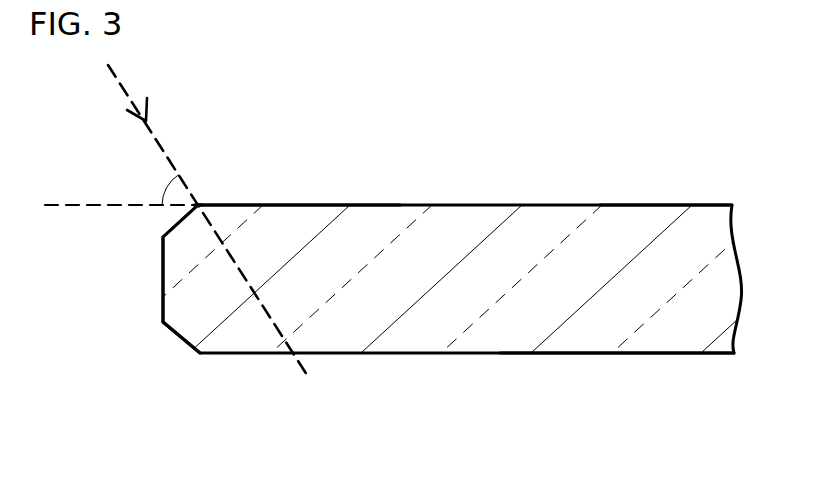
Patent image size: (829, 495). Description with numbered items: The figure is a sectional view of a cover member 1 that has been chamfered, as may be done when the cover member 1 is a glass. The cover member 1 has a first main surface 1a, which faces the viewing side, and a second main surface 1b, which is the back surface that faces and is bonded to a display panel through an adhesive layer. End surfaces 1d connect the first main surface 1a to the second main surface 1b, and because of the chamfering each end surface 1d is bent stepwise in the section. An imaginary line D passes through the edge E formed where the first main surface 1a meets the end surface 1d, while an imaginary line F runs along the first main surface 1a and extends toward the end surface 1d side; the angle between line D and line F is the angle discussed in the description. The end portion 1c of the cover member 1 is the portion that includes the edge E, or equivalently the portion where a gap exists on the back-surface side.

The cover member 1 is at (468, 220).
The first main surface 1a is at (649, 205).
The second main surface 1b is at (572, 353).
The end portion 1c is at (293, 218).
The end surface 1d is at (176, 337).
The line D is at (162, 135).
The edge E is at (198, 205).
The line F is at (93, 192).